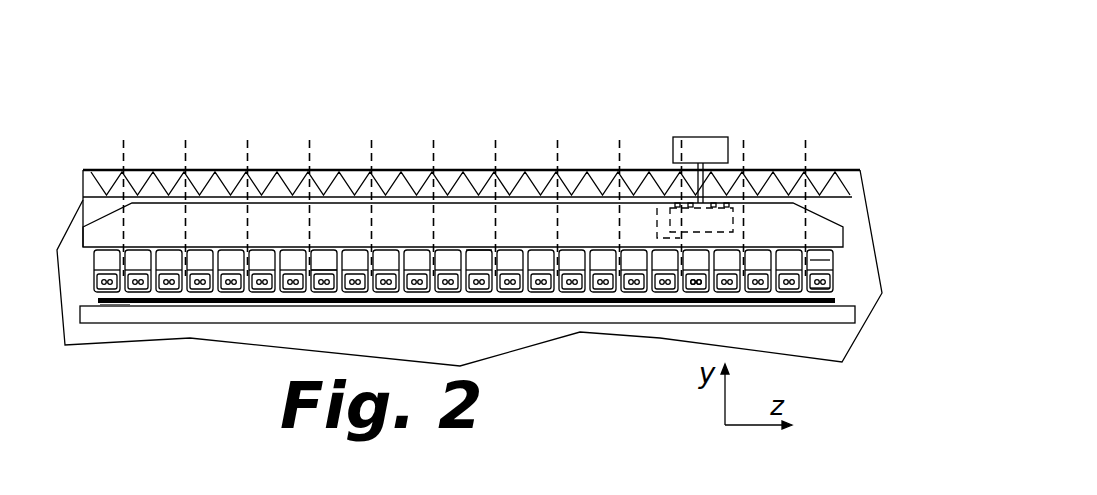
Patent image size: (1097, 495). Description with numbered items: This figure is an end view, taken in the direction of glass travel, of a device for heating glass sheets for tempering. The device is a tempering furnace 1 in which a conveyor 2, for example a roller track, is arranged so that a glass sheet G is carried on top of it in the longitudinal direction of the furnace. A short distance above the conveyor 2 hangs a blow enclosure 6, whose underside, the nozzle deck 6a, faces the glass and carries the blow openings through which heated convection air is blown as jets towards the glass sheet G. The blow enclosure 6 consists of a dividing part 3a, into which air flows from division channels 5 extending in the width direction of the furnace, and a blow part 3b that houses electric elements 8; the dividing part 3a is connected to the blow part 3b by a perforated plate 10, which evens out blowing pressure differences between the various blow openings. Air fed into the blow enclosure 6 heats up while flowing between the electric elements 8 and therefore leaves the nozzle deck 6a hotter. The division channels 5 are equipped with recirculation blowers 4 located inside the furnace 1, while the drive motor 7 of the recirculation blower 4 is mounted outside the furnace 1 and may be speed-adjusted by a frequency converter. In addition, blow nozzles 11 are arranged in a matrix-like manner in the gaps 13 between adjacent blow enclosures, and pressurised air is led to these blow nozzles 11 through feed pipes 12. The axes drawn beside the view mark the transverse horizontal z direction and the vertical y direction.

The tempering furnace 1 is at (487, 136).
The conveyor 2 is at (163, 310).
The dividing part 3a is at (823, 259).
The blow part 3b is at (827, 288).
The recirculation blower 4 is at (716, 227).
The division channel 5 is at (812, 223).
The blow enclosure 6 is at (833, 280).
The nozzle deck 6a is at (573, 293).
The drive motor 7 is at (698, 138).
The electric element 8 is at (693, 281).
The perforated plate 10 is at (325, 270).
The blow nozzle 11 is at (310, 262).
The feed pipe 12 is at (245, 160).
The gap 13 is at (463, 252).
The glass sheet G is at (125, 307).